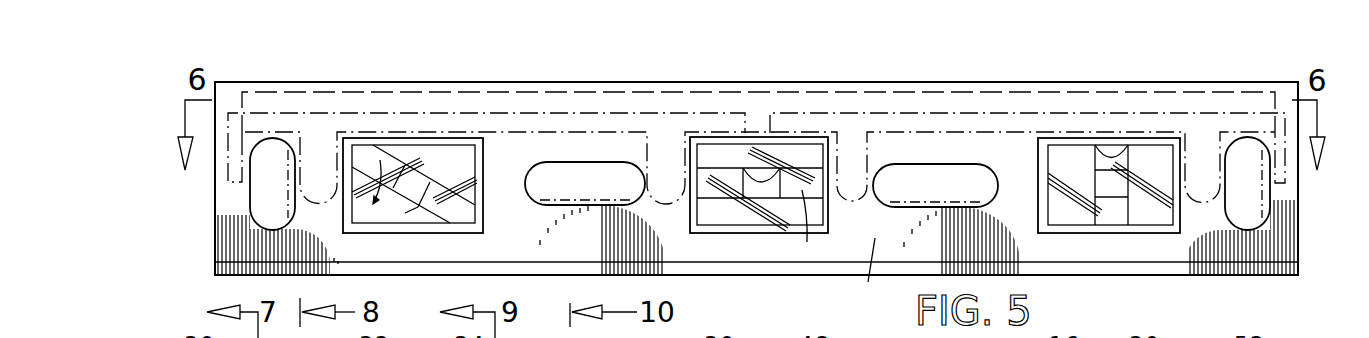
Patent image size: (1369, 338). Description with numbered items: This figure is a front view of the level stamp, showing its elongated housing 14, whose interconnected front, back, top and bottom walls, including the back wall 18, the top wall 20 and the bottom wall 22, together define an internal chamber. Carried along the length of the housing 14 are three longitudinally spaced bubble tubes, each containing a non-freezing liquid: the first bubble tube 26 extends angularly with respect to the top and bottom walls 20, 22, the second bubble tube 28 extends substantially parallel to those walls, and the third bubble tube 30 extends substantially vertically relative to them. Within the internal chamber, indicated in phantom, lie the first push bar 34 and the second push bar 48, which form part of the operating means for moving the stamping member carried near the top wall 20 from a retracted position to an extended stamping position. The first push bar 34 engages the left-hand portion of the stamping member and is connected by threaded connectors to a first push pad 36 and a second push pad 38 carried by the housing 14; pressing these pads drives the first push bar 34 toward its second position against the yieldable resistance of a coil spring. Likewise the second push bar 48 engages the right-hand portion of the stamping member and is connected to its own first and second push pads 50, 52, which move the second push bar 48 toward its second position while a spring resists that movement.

The housing 14 is at (597, 83).
The back wall 18 is at (863, 274).
The top wall 20 is at (838, 82).
The bottom wall 22 is at (716, 275).
The first bubble tube 26 is at (434, 216).
The second bubble tube 28 is at (733, 199).
The third bubble tube 30 is at (1110, 221).
The first push bar 34 is at (492, 113).
The first push pad 36 is at (281, 197).
The second push pad 38 is at (556, 178).
The second push bar 48 is at (1028, 113).
The first push pad 50 is at (1238, 201).
The second push pad 52 is at (946, 172).